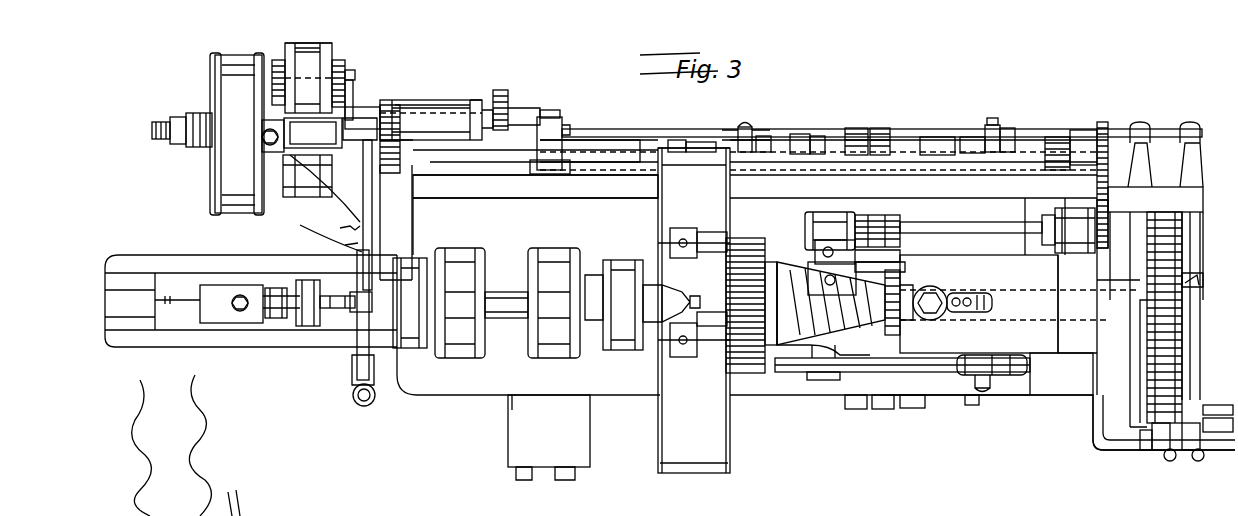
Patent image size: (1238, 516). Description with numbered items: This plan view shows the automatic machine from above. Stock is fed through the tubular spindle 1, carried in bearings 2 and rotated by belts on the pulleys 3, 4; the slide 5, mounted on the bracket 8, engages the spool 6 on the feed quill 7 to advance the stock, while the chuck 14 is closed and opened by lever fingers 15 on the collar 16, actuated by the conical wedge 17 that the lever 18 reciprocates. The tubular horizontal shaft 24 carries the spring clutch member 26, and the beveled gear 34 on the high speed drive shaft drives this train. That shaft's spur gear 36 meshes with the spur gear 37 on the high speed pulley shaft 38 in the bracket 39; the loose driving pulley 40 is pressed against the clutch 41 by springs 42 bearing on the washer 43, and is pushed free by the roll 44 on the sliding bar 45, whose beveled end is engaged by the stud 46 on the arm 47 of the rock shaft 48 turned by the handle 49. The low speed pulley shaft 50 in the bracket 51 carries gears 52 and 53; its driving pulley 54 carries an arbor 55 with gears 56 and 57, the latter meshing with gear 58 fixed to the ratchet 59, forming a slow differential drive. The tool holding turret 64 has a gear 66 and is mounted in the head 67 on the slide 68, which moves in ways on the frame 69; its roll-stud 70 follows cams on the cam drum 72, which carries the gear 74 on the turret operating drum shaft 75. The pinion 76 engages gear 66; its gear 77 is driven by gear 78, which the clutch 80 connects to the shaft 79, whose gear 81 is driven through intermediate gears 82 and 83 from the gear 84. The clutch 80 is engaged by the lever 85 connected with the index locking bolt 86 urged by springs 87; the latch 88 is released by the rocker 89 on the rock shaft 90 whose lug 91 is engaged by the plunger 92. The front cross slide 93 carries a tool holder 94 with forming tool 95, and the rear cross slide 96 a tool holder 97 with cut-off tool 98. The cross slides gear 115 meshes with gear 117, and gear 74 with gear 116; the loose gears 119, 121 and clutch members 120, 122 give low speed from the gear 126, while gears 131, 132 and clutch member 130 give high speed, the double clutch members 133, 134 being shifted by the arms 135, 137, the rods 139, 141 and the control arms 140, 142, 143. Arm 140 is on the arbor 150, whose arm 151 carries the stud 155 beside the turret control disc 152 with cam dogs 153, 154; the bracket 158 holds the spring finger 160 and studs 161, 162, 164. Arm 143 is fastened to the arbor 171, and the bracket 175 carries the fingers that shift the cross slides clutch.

The tubular spindle 1 is at (506, 305).
The bearings 2 is at (518, 304).
The pulley 3 is at (460, 303).
The pulley 4 is at (554, 303).
The slide 5 is at (205, 310).
The spool 6 is at (265, 325).
The feed quill 7 is at (285, 322).
The bracket 8 is at (251, 301).
The chuck 14 is at (648, 330).
The lever fingers 15 is at (338, 312).
The collar 16 is at (310, 328).
The conical wedge 17 is at (355, 315).
The lever 18 is at (372, 330).
The tubular horizontal shaft 24 is at (340, 228).
The spring clutch member 26 is at (345, 245).
The beveled gear 34 is at (352, 175).
The spur gear 36 is at (420, 185).
The spur gear 37 is at (400, 100).
The high speed pulley shaft 38 is at (152, 131).
The bracket 39 is at (308, 78).
The driving pulley 40 is at (238, 134).
The clutch 41 is at (258, 98).
The springs 42 is at (180, 117).
The washer 43 is at (186, 112).
The roll 44 is at (262, 142).
The sliding bar 45 is at (313, 133).
The stud 46 is at (345, 162).
The arm 47 is at (386, 105).
The rock shaft 48 is at (380, 212).
The handle 49 is at (352, 396).
The low speed pulley shaft 50 is at (437, 100).
The bracket 51 is at (460, 100).
The gear 52 is at (270, 68).
The gear 53 is at (502, 90).
The driving pulley 54 is at (328, 43).
The arbor 55 is at (305, 43).
The gear 56 is at (288, 43).
The gear 57 is at (340, 60).
The gear 58 is at (352, 72).
The ratchet 59 is at (355, 100).
The tool holding turret 64 is at (748, 238).
The gear 66 is at (903, 330).
The head 67 is at (795, 350).
The slide 68 is at (979, 304).
The frame 69 is at (1061, 374).
The roll-stud 70 is at (942, 318).
The cam drum 72 is at (980, 293).
The gear 74 is at (885, 410).
The turret operating drum shaft 75 is at (1077, 304).
The pinion 76 is at (900, 258).
The gear 77 is at (808, 270).
The gear 78 is at (845, 212).
The shaft 79 is at (957, 222).
The clutch 80 is at (888, 215).
The gear 81 is at (1096, 230).
The intermediate gear 82 is at (1108, 206).
The intermediate gear 83 is at (1088, 182).
The gear 84 is at (1104, 122).
The lever 85 is at (908, 270).
The index locking bolt 86 is at (780, 348).
The springs 87 is at (772, 262).
The latch 88 is at (875, 372).
The rocker 89 is at (818, 382).
The rock shaft 90 is at (915, 408).
The lug 91 is at (985, 400).
The plunger 92 is at (975, 385).
The front cross slide 93 is at (694, 310).
The tool holder 94 is at (686, 358).
The forming tool 95 is at (698, 320).
The rear cross slide 96 is at (694, 185).
The tool holder 97 is at (683, 228).
The cut-off tool 98 is at (698, 275).
The gear 115 is at (856, 410).
The gear 116 is at (880, 128).
The gear 117 is at (855, 128).
The gear 119 is at (935, 137).
The clutch member 120 is at (962, 137).
The gear 121 is at (815, 136).
The clutch member 122 is at (796, 134).
The gear 126 is at (498, 180).
The clutch member 130 is at (702, 142).
The gear 131 is at (1052, 137).
The gear 132 is at (678, 140).
The double clutch member 133 is at (1008, 128).
The double clutch member 134 is at (763, 136).
The arm 135 is at (992, 118).
The arm 137 is at (744, 120).
The rod 139 is at (1080, 130).
The control arm 140 is at (1200, 125).
The rod 141 is at (612, 129).
The control arm 142 is at (1152, 125).
The control arm 143 is at (566, 125).
The arbor 150 is at (1200, 340).
The arm 151 is at (1218, 402).
The turret control disc 152 is at (1164, 317).
The cam dog 153 is at (1203, 275).
The cam dog 154 is at (1200, 316).
The stud 155 is at (1200, 420).
The bracket 158 is at (1090, 442).
The spring finger 160 is at (1158, 452).
The stud 161 is at (1205, 452).
The stud 162 is at (1172, 461).
The stud 164 is at (1144, 452).
The arbor 171 is at (550, 110).
The bracket 175 is at (590, 430).